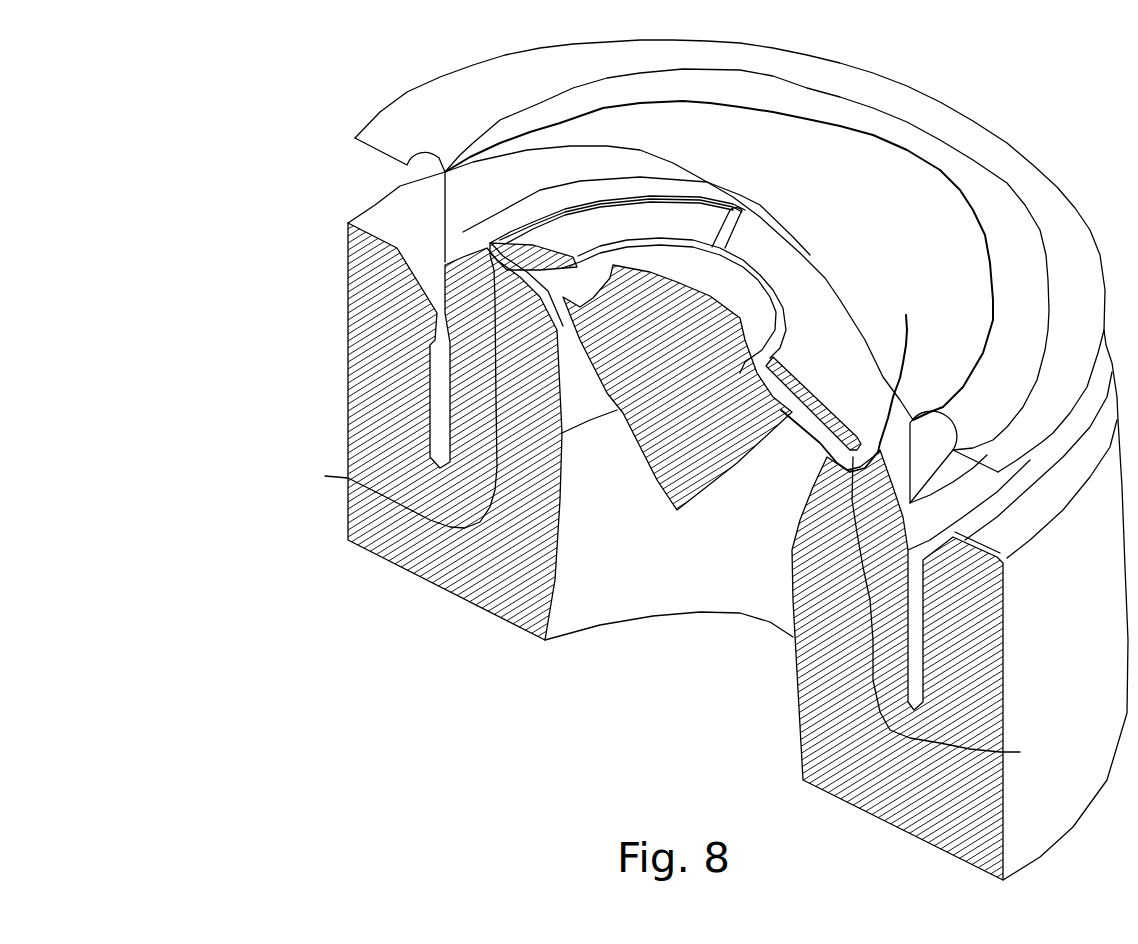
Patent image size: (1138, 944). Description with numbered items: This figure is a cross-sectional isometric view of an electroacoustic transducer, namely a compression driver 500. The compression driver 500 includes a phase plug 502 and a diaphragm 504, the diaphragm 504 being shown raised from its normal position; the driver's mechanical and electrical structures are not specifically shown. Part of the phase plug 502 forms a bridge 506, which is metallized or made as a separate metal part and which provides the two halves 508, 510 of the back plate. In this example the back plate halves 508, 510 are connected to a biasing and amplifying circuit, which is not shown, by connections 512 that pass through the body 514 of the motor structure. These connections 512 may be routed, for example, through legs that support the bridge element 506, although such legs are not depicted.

The compression driver 500 is at (310, 150).
The phase plug 502 is at (635, 375).
The diaphragm 504 is at (836, 250).
The bridge 506 is at (867, 393).
The half of the back plate 508 is at (650, 233).
The half of the back plate 510 is at (804, 368).
The connections 512 is at (490, 497).
The body of the motor structure 514 is at (797, 603).